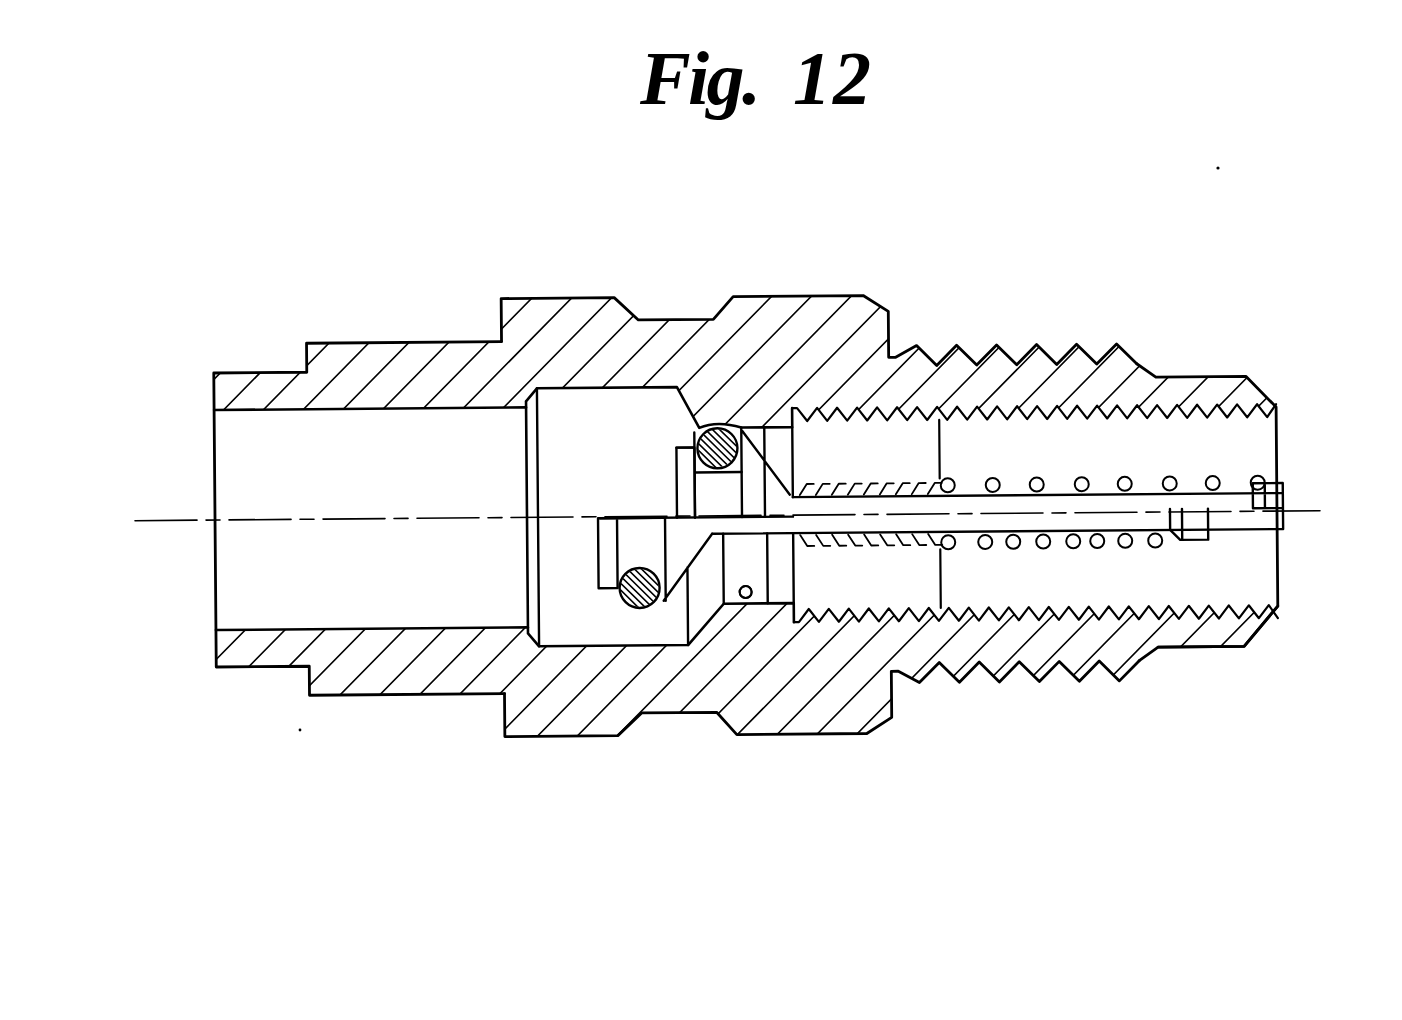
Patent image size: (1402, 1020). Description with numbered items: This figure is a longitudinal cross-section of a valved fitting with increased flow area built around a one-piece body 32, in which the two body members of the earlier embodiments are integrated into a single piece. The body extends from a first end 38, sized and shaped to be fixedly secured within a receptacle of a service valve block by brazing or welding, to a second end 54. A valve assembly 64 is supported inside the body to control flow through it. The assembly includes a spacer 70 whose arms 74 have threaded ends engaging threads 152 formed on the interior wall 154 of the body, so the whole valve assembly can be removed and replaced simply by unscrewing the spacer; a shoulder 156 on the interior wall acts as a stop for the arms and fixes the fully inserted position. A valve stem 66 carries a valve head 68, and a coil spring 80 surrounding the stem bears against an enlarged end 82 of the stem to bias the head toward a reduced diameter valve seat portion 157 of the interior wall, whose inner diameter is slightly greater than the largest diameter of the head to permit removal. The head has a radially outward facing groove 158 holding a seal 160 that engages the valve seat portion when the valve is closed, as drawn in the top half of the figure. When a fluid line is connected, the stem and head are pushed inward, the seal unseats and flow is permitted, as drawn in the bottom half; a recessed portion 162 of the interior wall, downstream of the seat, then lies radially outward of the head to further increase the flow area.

The one-piece body 32 is at (836, 288).
The first end 38 is at (250, 368).
The second end 54 is at (1245, 380).
The valve assembly 64 is at (626, 460).
The valve stem 66 is at (1147, 503).
The valve head 68 is at (608, 532).
The spacer 70 is at (901, 585).
The arms 74 is at (753, 600).
The coil spring 80 is at (1092, 480).
The enlarged end 82 is at (1290, 490).
The threads 152 is at (1278, 611).
The interior wall 154 is at (283, 406).
The shoulder 156 is at (781, 412).
The valve seat portion 157 is at (744, 599).
The groove 158 is at (692, 442).
The seal 160 is at (716, 428).
The recessed portion 162 is at (548, 638).